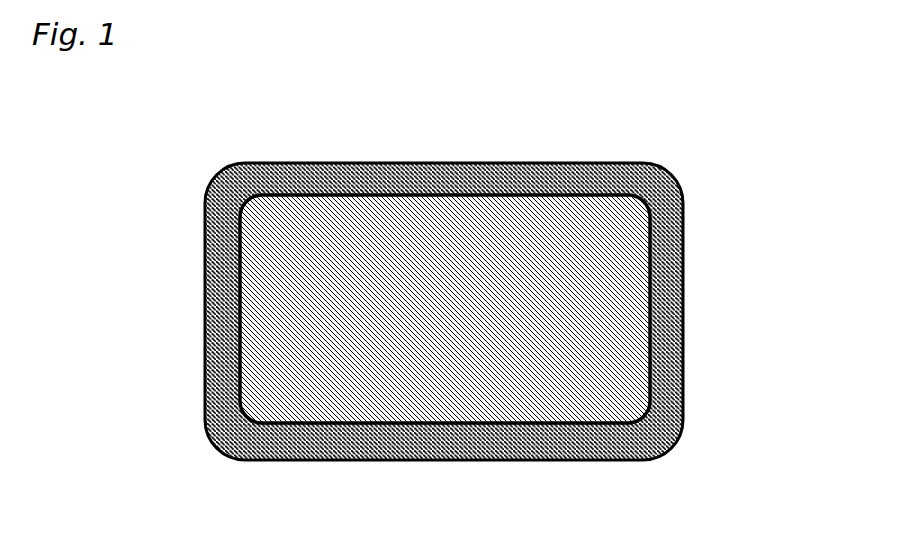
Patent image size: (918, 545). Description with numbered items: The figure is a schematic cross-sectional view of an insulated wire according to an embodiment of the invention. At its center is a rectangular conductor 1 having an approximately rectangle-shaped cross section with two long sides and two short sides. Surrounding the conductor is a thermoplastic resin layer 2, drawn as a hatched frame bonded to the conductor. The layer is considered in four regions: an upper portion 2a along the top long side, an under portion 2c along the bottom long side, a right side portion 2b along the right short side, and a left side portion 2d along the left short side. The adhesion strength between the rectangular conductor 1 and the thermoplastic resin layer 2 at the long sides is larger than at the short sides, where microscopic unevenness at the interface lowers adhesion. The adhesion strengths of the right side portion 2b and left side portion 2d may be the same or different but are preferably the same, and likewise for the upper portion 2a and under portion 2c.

The rectangular conductor 1 is at (484, 233).
The thermoplastic resin layer 2 is at (683, 245).
The upper portion of the thermoplastic resin layer 2a is at (333, 163).
The right side portion of the thermoplastic resin layer 2b is at (683, 350).
The under portion of the thermoplastic resin layer 2c is at (368, 460).
The left side portion of the thermoplastic resin layer 2d is at (205, 315).